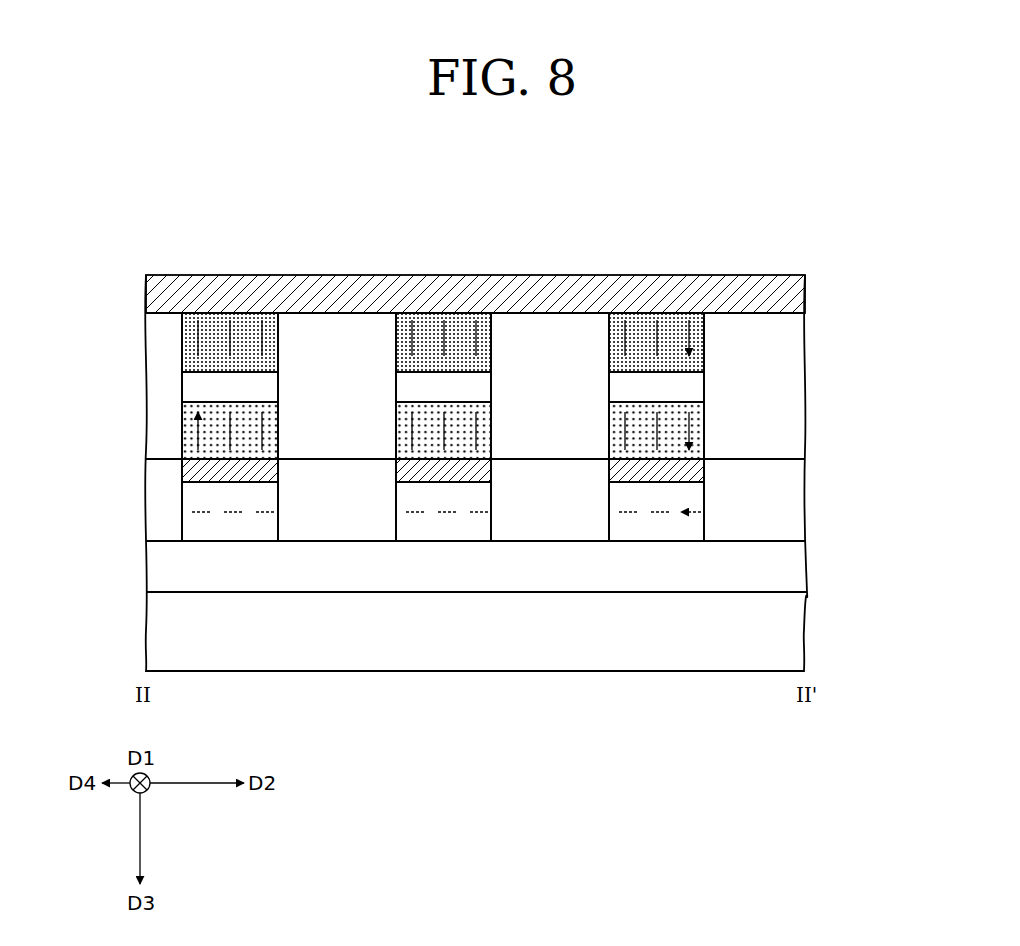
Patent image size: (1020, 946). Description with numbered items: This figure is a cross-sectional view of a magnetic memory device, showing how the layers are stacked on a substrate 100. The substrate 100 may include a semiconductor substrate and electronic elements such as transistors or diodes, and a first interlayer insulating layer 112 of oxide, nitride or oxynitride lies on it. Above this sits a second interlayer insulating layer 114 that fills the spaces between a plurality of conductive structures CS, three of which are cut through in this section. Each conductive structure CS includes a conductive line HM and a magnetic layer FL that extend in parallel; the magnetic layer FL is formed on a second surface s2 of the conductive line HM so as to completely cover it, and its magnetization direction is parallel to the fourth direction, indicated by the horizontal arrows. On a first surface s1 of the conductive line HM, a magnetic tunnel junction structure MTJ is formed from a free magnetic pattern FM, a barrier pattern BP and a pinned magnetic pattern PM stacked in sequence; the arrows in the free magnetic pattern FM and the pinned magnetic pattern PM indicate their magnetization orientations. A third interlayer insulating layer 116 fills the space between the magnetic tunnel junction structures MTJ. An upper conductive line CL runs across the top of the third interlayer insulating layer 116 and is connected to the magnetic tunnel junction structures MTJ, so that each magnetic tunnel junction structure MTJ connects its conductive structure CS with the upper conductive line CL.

The substrate 100 is at (150, 636).
The first interlayer insulating layer 112 is at (160, 570).
The second interlayer insulating layer 114 is at (155, 518).
The third interlayer insulating layer 116 is at (152, 352).
The upper conductive line CL is at (796, 296).
The magnetic tunnel junction structure MTJ is at (567, 386).
The pinned magnetic pattern PM is at (697, 337).
The barrier pattern BP is at (697, 385).
The free magnetic pattern FM is at (697, 428).
The conductive structure CS is at (563, 500).
The conductive line HM is at (694, 473).
The magnetic layer FL is at (697, 497).
The first surface s1 is at (183, 456).
The second surface s2 is at (183, 483).